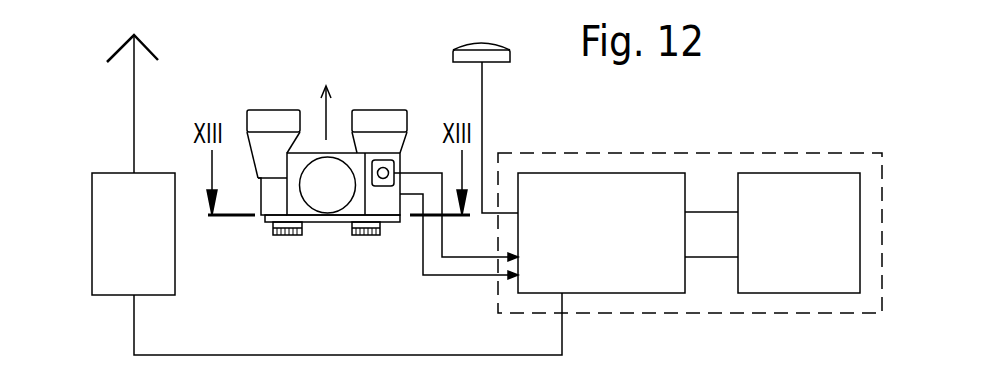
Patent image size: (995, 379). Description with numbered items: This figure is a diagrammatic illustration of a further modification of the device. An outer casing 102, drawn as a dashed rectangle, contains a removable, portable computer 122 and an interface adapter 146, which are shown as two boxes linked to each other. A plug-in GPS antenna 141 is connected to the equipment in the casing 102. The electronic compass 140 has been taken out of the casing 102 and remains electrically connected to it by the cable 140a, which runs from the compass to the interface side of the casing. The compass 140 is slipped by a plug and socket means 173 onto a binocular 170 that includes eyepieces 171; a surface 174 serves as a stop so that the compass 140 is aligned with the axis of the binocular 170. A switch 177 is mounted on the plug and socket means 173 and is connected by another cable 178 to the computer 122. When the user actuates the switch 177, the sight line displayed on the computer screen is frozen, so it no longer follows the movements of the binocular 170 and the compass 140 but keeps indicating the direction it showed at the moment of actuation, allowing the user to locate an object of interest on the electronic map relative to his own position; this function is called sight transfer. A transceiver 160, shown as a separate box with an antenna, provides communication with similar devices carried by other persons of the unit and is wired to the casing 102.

The outer casing 102 is at (805, 153).
The removable, portable computer 122 is at (795, 272).
The electronic compass 140 is at (333, 172).
The cable 140a is at (433, 275).
The plug-in GPS antenna 141 is at (495, 55).
The interface adapter 146 is at (601, 270).
The transceiver 160 is at (107, 220).
The binocular 170 is at (258, 108).
The eyepieces 171 is at (290, 235).
The plug and socket means 173 is at (320, 222).
The surface 174 is at (250, 222).
The switch 177 is at (385, 168).
The cable 178 is at (475, 258).